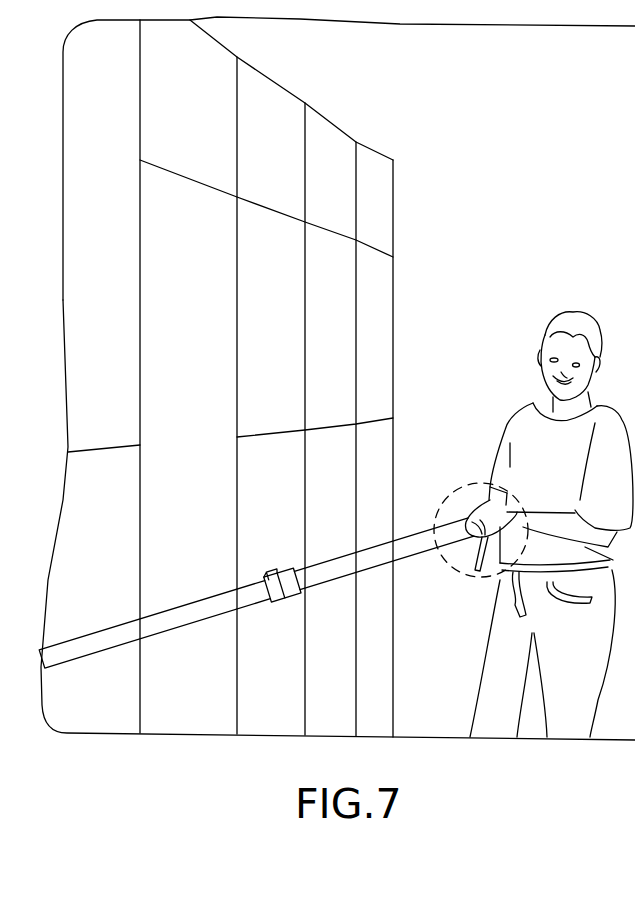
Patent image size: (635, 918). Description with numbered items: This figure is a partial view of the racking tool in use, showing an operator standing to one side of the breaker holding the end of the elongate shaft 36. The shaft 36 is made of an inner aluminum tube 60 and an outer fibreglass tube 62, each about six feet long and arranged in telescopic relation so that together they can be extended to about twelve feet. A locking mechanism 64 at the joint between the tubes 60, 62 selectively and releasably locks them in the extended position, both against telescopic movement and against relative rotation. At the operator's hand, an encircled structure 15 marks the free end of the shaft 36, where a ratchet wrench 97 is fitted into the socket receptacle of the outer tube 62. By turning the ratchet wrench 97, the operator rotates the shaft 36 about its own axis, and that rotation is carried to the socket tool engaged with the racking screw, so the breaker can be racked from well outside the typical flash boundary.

The elongate shaft 36 is at (297, 492).
The inner aluminum tube 60 is at (190, 612).
The outer fibreglass tube 62 is at (322, 566).
The locking mechanism 64 is at (255, 574).
The encircled structure 15 is at (472, 483).
The ratchet wrench 97 is at (472, 558).